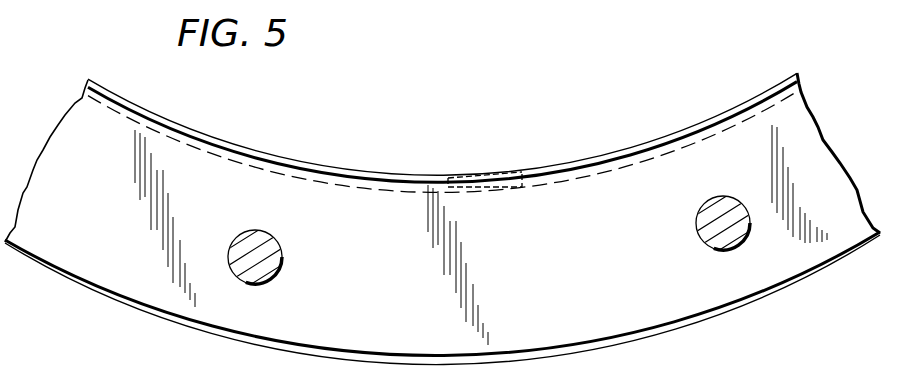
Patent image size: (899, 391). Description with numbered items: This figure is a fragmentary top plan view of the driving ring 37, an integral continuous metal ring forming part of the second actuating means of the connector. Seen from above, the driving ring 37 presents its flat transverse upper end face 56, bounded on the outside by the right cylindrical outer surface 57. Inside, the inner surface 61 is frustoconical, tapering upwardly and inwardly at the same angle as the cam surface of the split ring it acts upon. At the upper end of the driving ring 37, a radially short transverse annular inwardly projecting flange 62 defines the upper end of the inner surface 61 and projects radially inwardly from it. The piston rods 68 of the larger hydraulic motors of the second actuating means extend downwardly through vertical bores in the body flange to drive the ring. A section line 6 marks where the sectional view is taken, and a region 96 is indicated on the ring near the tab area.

The section line 6- 6 is at (445, 132).
The driving ring 37 is at (309, 327).
The flat transverse upper end face 56 is at (549, 278).
The right cylindrical outer surface 57 is at (570, 352).
The inner surface 61 is at (290, 168).
The inwardly projecting flange 62 is at (173, 128).
The piston rods 68 is at (282, 252).
The tab 96 is at (487, 170).